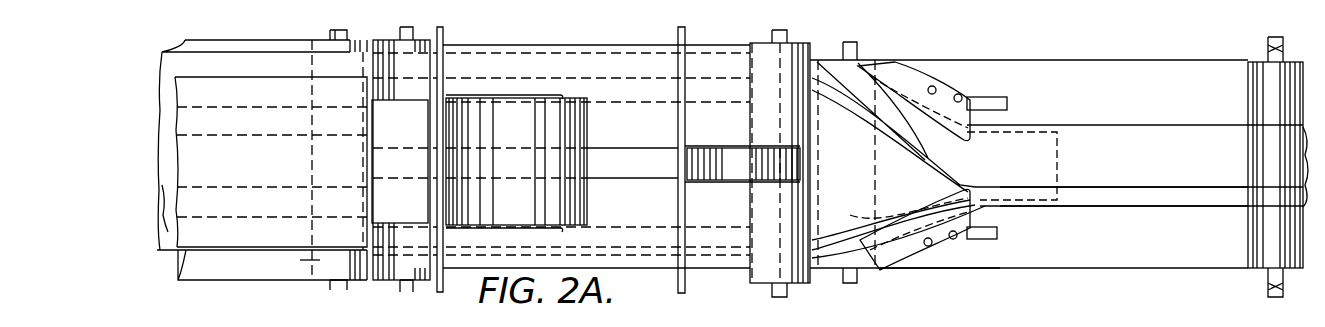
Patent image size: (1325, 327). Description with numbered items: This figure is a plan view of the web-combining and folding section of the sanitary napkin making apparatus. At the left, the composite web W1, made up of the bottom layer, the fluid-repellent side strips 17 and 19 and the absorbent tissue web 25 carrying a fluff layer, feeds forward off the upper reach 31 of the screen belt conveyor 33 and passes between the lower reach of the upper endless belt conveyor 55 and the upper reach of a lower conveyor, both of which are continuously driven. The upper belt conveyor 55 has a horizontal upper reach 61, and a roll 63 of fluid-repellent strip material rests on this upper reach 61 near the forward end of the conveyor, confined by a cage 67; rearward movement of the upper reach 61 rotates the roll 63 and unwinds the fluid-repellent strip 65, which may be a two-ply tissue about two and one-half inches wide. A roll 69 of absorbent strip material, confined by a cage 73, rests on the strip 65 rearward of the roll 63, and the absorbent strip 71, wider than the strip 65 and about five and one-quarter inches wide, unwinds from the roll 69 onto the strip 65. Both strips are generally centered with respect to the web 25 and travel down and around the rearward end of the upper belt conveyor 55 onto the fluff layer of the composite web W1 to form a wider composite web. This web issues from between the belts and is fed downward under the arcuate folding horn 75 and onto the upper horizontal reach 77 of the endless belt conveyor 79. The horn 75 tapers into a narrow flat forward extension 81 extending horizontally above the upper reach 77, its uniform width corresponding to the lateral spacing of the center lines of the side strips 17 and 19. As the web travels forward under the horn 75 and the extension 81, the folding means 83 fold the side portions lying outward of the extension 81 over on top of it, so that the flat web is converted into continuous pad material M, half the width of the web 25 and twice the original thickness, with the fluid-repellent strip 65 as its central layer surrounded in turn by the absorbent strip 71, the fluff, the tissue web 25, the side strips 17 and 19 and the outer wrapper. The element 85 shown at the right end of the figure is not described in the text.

The fluid-repellent side strip 17 is at (176, 140).
The fluid-repellent side strip 19 is at (176, 225).
The absorbent tissue web 25 is at (210, 253).
The upper reach of screen belt conveyor 31 is at (222, 272).
The screen belt conveyor 33 is at (258, 282).
The composite web W1 is at (258, 255).
The upper endless belt conveyor 55 is at (385, 284).
The absorbent strip 71 is at (395, 115).
The horizontal upper reach 61 is at (612, 45).
The cage 73 is at (525, 95).
The roll of absorbent strip material 69 is at (587, 125).
The fluid-repellent strip 65 is at (628, 180).
The cage 67 is at (708, 184).
The roll of fluid-repellent strip material 63 is at (750, 172).
The arcuate folding horn 75 is at (854, 169).
The upper horizontal reach 77 is at (1043, 257).
The narrow flat forward extension 81 is at (1020, 133).
The folding means 83 is at (934, 92).
The endless belt conveyor 79 is at (994, 274).
The continuous pad material M is at (1100, 207).
The end cap 85 is at (1249, 83).